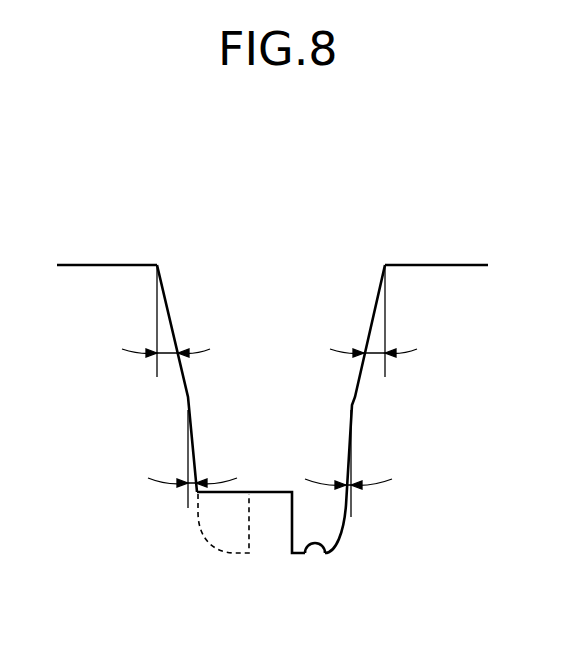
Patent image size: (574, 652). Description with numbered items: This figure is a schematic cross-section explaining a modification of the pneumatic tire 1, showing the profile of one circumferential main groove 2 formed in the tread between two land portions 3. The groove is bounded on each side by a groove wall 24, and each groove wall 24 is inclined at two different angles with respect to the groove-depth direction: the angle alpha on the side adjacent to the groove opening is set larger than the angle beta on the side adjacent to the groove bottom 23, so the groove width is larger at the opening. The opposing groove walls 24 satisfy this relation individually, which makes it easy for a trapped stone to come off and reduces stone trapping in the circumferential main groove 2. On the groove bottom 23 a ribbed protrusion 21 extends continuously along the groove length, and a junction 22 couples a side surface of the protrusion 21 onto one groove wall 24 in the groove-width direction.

The pneumatic tire 1 is at (455, 160).
The circumferential main groove 2 is at (259, 281).
The land portion 3 is at (87, 263).
The protrusion 21 is at (273, 542).
The junction 22 is at (230, 535).
The groove bottom 23 is at (323, 555).
The groove wall 24 is at (166, 302).